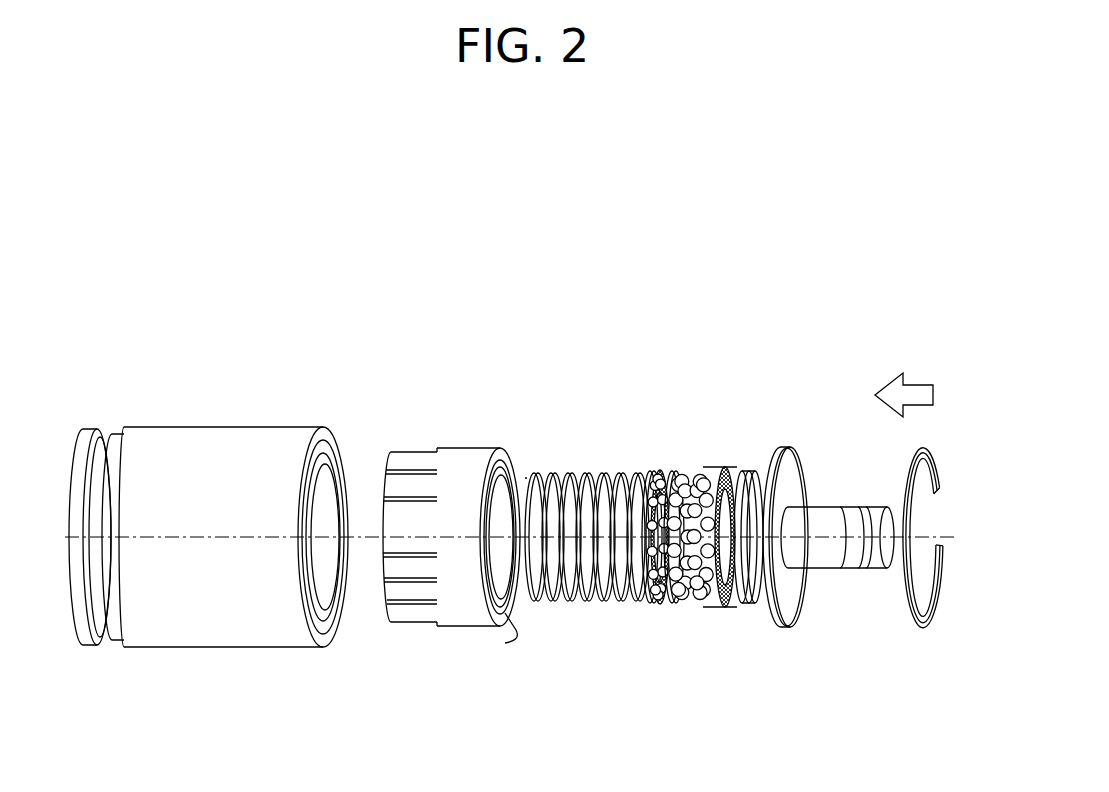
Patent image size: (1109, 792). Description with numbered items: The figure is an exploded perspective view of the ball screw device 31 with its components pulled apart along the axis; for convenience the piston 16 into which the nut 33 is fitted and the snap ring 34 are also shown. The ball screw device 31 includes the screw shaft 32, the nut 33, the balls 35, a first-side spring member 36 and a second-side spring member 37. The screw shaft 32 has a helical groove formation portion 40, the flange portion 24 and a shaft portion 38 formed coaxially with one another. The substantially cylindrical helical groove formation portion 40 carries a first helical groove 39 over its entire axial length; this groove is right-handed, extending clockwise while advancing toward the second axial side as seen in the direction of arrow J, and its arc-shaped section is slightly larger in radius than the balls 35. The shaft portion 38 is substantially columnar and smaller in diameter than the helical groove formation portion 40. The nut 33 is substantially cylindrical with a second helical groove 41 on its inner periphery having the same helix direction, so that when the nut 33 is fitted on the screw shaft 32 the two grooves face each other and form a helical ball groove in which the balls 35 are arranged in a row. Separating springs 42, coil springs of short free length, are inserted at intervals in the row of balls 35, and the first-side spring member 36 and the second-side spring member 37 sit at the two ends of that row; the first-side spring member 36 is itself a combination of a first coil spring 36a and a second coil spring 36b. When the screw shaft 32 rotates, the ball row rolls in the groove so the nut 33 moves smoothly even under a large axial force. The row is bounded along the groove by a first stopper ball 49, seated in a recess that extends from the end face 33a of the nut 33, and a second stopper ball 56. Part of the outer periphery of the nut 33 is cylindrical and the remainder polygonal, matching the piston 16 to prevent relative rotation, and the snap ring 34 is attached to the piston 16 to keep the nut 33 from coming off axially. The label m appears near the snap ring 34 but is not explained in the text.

The piston 16 is at (273, 432).
The flange portion 24 is at (777, 628).
The ball screw device 31 is at (588, 307).
The screw shaft 32 is at (714, 535).
The nut 33 is at (457, 450).
The end face 33a is at (505, 643).
The snap ring 34 is at (923, 630).
The balls 35 is at (663, 607).
The first-side spring member 36 is at (740, 577).
The first coil spring 36a is at (730, 470).
The second coil spring 36b is at (718, 598).
The second-side spring member 37 is at (618, 472).
The shaft portion 38 is at (833, 570).
The first helical groove 39 is at (569, 609).
The helical groove formation portion 40 is at (582, 603).
The second helical groove 41 is at (569, 543).
The separating springs 42 is at (692, 607).
The first stopper ball 49 is at (735, 593).
The second stopper ball 56 is at (643, 472).
The arrow J is at (918, 395).
The ring gap m is at (920, 537).